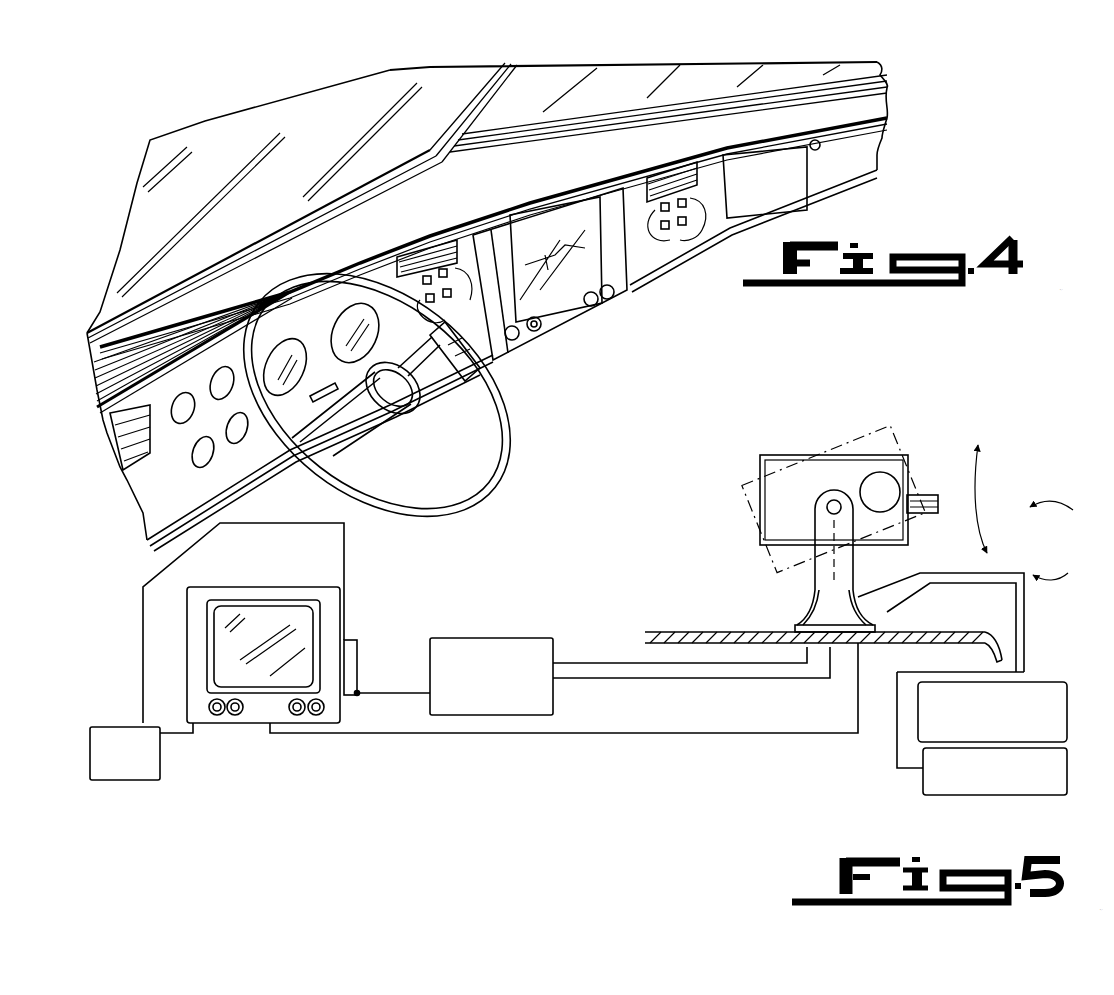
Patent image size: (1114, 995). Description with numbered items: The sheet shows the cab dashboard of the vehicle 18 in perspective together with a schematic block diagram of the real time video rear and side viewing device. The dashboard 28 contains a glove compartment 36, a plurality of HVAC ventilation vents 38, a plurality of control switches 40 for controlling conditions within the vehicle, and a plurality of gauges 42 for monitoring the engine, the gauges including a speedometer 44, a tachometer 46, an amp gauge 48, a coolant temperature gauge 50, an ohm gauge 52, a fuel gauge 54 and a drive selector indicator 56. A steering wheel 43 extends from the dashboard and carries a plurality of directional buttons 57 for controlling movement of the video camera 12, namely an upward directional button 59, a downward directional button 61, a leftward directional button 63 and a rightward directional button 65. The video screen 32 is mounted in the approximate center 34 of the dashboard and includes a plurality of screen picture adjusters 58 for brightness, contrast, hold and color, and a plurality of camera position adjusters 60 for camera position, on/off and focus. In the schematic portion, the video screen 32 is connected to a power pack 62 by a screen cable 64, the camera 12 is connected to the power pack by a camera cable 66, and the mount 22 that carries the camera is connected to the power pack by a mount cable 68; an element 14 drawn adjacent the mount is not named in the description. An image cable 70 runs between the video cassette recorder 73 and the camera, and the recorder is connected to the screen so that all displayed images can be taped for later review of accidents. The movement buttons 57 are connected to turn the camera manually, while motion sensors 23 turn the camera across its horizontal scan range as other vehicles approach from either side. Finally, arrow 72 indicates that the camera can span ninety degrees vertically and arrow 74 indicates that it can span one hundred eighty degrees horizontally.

In FIG. 5, the video camera 12 is at (760, 458).
In FIG. 5, the mounting bracket 14 is at (940, 631).
In FIG. 4, the vehicle 18 is at (431, 150).
In FIG. 5, the mount 22 is at (814, 612).
In FIG. 5, the motion sensors 23 is at (1058, 796).
In FIG. 4, the dashboard 28 is at (105, 352).
In FIG. 4, the video screen 32 is at (580, 308).
In FIG. 5, the video screen 32 is at (290, 590).
In FIG. 4, the approximate center 34 is at (455, 150).
In FIG. 4, the glove compartment 36 is at (880, 127).
In FIG. 4, the ventilation vents 38 is at (114, 450).
In FIG. 4, the control switches 40 is at (530, 335).
In FIG. 4, the gauges 42 is at (231, 421).
In FIG. 4, the steering wheel 43 is at (440, 502).
In FIG. 4, the speedometer 44 is at (308, 325).
In FIG. 4, the tachometer 46 is at (426, 346).
In FIG. 4, the amp gauge 48 is at (185, 398).
In FIG. 4, the coolant temperature gauge 50 is at (200, 468).
In FIG. 4, the ohm gauge 52 is at (241, 437).
In FIG. 4, the fuel gauge 54 is at (236, 366).
In FIG. 4, the drive selector indicator 56 is at (319, 391).
In FIG. 4, the directional buttons 57 is at (504, 440).
In FIG. 5, the directional buttons 57 is at (1038, 683).
In FIG. 4, the screen picture adjusters 58 is at (628, 283).
In FIG. 4, the upward directional button 59 is at (402, 270).
In FIG. 4, the camera position adjusters 60 is at (546, 334).
In FIG. 4, the downward directional button 61 is at (482, 397).
In FIG. 5, the power pack 62 is at (494, 640).
In FIG. 4, the leftward directional button 63 is at (455, 382).
In FIG. 5, the screen cable 64 is at (380, 690).
In FIG. 4, the rightward directional button 65 is at (500, 394).
In FIG. 5, the camera cable 66 is at (672, 598).
In FIG. 5, the mount cable 68 is at (625, 683).
In FIG. 5, the image cable 70 is at (478, 757).
In FIG. 5, the arrow 72 is at (990, 478).
In FIG. 5, the video cassette recorder 73 is at (165, 783).
In FIG. 5, the arrow 74 is at (1047, 505).